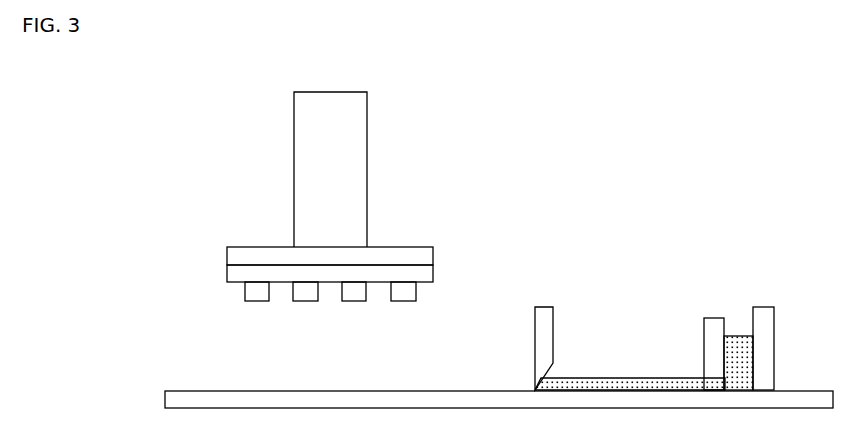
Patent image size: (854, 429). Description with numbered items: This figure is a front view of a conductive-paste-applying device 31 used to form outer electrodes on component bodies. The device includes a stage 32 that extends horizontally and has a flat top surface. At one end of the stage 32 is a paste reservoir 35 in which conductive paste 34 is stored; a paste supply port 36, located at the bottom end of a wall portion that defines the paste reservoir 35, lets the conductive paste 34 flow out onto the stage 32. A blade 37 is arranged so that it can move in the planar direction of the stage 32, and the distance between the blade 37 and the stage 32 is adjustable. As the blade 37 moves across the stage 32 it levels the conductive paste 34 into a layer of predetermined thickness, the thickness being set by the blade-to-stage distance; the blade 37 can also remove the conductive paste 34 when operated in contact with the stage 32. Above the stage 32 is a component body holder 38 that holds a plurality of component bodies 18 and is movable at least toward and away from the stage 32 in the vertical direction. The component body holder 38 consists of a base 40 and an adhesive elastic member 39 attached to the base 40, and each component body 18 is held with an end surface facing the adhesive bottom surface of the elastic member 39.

The conductive-paste-applying device 31 is at (516, 81).
The stage 32 is at (180, 390).
The conductive paste 34 is at (737, 340).
The paste reservoir 35 is at (714, 316).
The paste supply port 36 is at (717, 377).
The blade 37 is at (543, 313).
The component body holder 38 is at (292, 146).
The adhesive elastic member 39 is at (227, 277).
The base 40 is at (227, 252).
The component body 18 is at (297, 295).